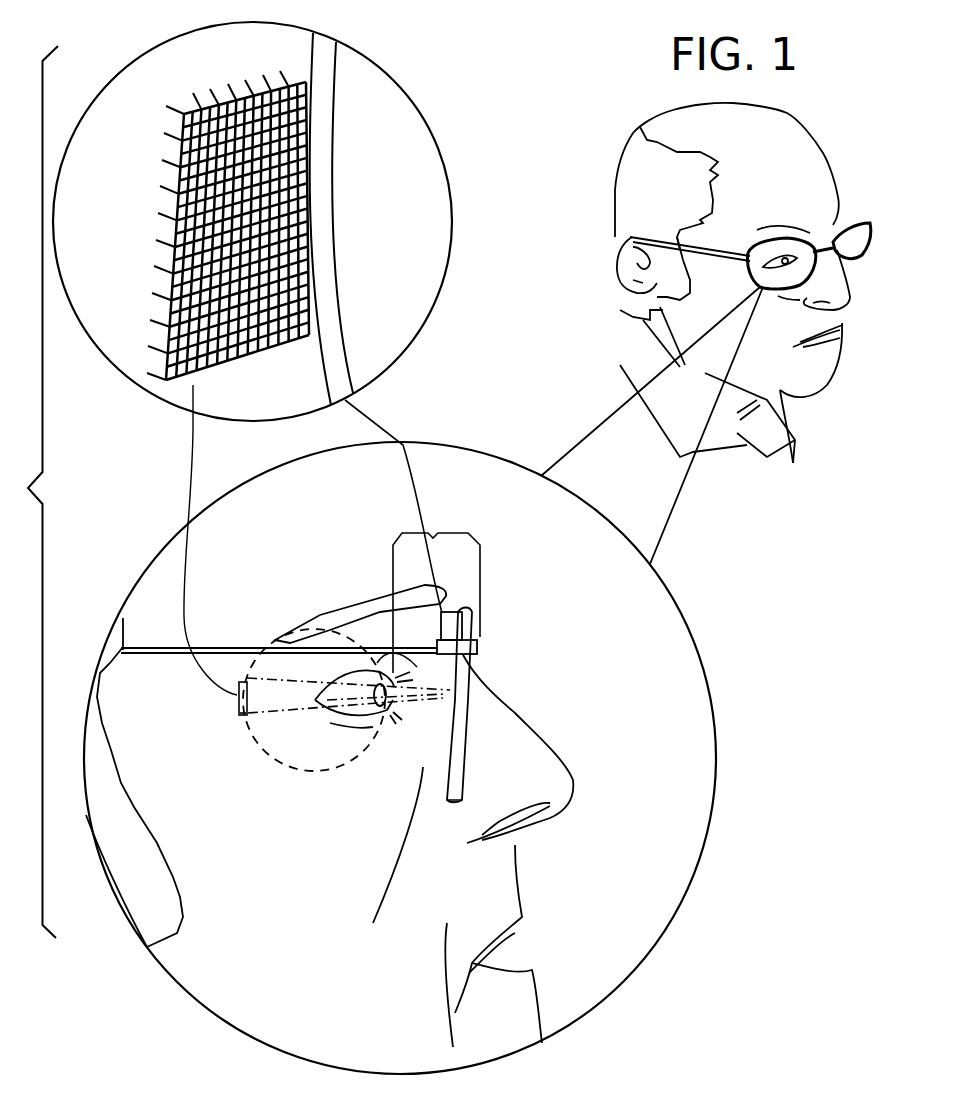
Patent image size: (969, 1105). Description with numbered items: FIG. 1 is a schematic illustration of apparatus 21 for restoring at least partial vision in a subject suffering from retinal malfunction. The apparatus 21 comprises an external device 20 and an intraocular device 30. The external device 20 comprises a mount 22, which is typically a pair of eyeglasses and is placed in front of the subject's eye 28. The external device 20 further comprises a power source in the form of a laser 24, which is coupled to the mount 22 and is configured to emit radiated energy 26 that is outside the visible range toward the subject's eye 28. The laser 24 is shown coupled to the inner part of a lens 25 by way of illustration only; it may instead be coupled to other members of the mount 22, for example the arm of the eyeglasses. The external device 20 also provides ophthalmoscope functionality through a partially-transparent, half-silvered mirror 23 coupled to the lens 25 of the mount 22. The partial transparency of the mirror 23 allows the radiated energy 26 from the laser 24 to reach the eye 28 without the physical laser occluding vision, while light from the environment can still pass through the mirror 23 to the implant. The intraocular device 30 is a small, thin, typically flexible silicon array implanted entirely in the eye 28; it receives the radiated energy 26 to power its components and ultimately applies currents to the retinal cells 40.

The external device 20 is at (436, 586).
The apparatus 21 is at (29, 492).
The mount 22 is at (246, 647).
The partially-transparent mirror 23 is at (450, 697).
The laser 24 is at (452, 612).
The lens 25 is at (463, 775).
The radiated energy 26 is at (470, 680).
The eye 28 is at (293, 762).
The intraocular device 30 is at (188, 93).
The retinal cells 40 is at (244, 714).